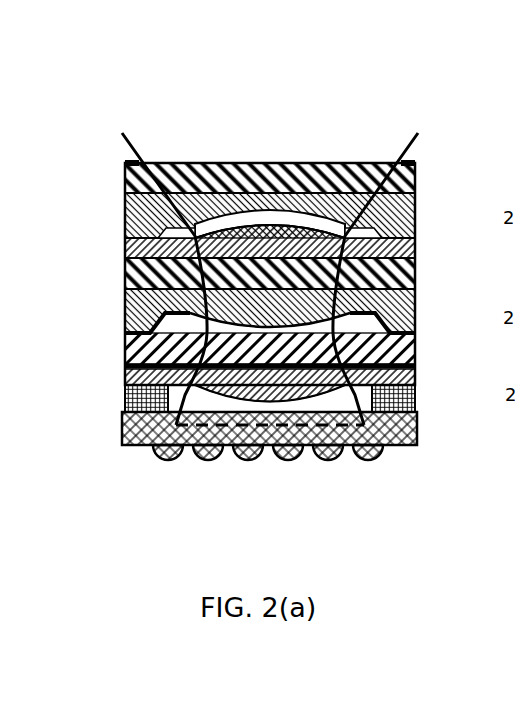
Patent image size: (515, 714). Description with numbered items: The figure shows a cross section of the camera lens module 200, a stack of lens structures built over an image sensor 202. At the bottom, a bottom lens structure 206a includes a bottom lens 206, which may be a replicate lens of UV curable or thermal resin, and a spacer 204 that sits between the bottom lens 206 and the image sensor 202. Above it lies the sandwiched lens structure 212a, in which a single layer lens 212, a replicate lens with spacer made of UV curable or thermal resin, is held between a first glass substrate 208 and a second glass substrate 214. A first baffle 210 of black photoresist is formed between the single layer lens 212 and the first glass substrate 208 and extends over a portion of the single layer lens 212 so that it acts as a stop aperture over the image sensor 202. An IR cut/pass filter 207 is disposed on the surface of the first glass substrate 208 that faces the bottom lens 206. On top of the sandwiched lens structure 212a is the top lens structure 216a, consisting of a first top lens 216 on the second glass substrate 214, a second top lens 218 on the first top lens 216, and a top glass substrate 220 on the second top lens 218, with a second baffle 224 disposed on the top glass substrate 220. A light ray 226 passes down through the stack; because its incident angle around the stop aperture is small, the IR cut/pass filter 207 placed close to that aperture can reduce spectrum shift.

The camera lens module 200 is at (253, 61).
The image sensor 202 is at (417, 438).
The spacer 204 is at (417, 402).
The bottom lens 206 is at (417, 378).
The bottom lens structure 206a is at (273, 395).
The IR cut/pass filter 207 is at (425, 366).
The first glass substrate 208 is at (417, 355).
The first baffle 210 is at (421, 329).
The single layer lens 212 is at (417, 310).
The sandwiched lens structure 212a is at (268, 307).
The second glass substrate 214 is at (417, 275).
The first top lens 216 is at (417, 248).
The top lens structure 216a is at (268, 203).
The second top lens 218 is at (417, 215).
The top glass substrate 220 is at (417, 177).
The second baffle 224 is at (405, 160).
The light ray 226 is at (143, 134).